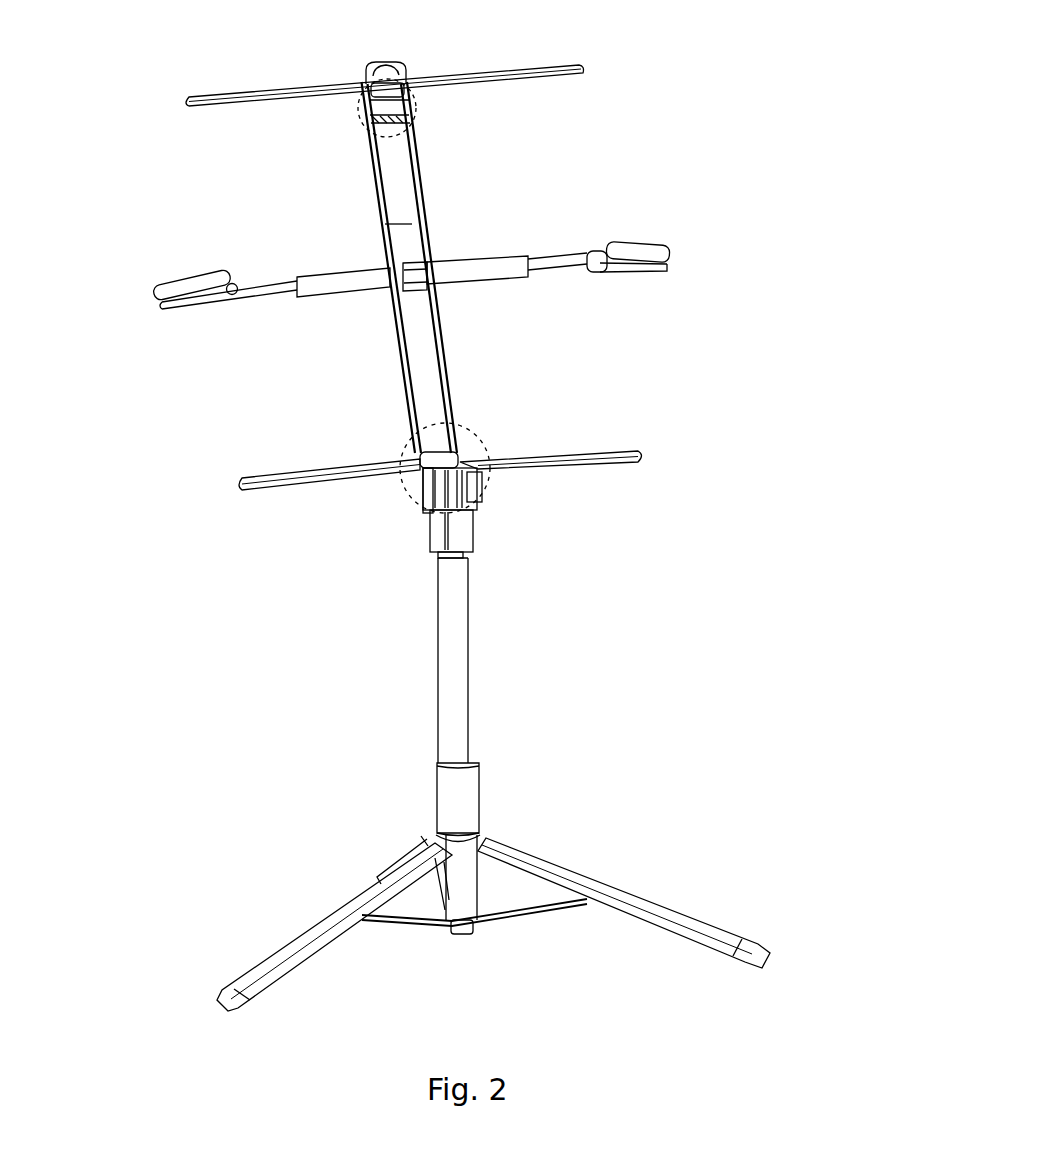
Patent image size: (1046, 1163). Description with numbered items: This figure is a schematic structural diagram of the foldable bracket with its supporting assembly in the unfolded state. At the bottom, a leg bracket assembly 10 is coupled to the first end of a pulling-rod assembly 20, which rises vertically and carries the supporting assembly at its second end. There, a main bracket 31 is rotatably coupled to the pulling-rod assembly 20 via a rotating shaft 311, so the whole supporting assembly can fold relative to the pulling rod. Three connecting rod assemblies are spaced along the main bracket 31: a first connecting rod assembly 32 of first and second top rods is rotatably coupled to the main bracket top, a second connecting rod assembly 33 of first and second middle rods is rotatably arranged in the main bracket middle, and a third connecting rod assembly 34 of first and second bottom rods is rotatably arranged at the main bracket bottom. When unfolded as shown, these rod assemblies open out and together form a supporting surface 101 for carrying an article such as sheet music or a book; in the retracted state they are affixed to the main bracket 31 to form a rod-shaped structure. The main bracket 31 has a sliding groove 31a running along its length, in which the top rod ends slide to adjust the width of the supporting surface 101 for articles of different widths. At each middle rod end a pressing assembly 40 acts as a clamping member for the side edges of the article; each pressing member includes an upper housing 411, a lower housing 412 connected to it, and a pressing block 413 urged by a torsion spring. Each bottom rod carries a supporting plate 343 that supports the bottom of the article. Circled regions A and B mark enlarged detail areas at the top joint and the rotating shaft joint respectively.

The supporting surface 101 is at (598, 167).
The leg bracket assembly 10 is at (563, 875).
The pulling-rod assembly 20 is at (462, 700).
The main bracket 31 is at (414, 215).
The sliding groove 31a is at (398, 169).
The rotating shaft 311 is at (416, 497).
The first connecting rod assembly 32 is at (495, 67).
The second connecting rod assembly 33 is at (468, 262).
The third connecting rod assembly 34 is at (478, 452).
The supporting plate 343 is at (602, 448).
The pressing assembly 40 is at (641, 249).
The upper housing 411 is at (236, 284).
The lower housing 412 is at (232, 302).
The pressing block 413 is at (183, 275).
The enlarged detail region A is at (392, 63).
The enlarged detail region B is at (442, 421).